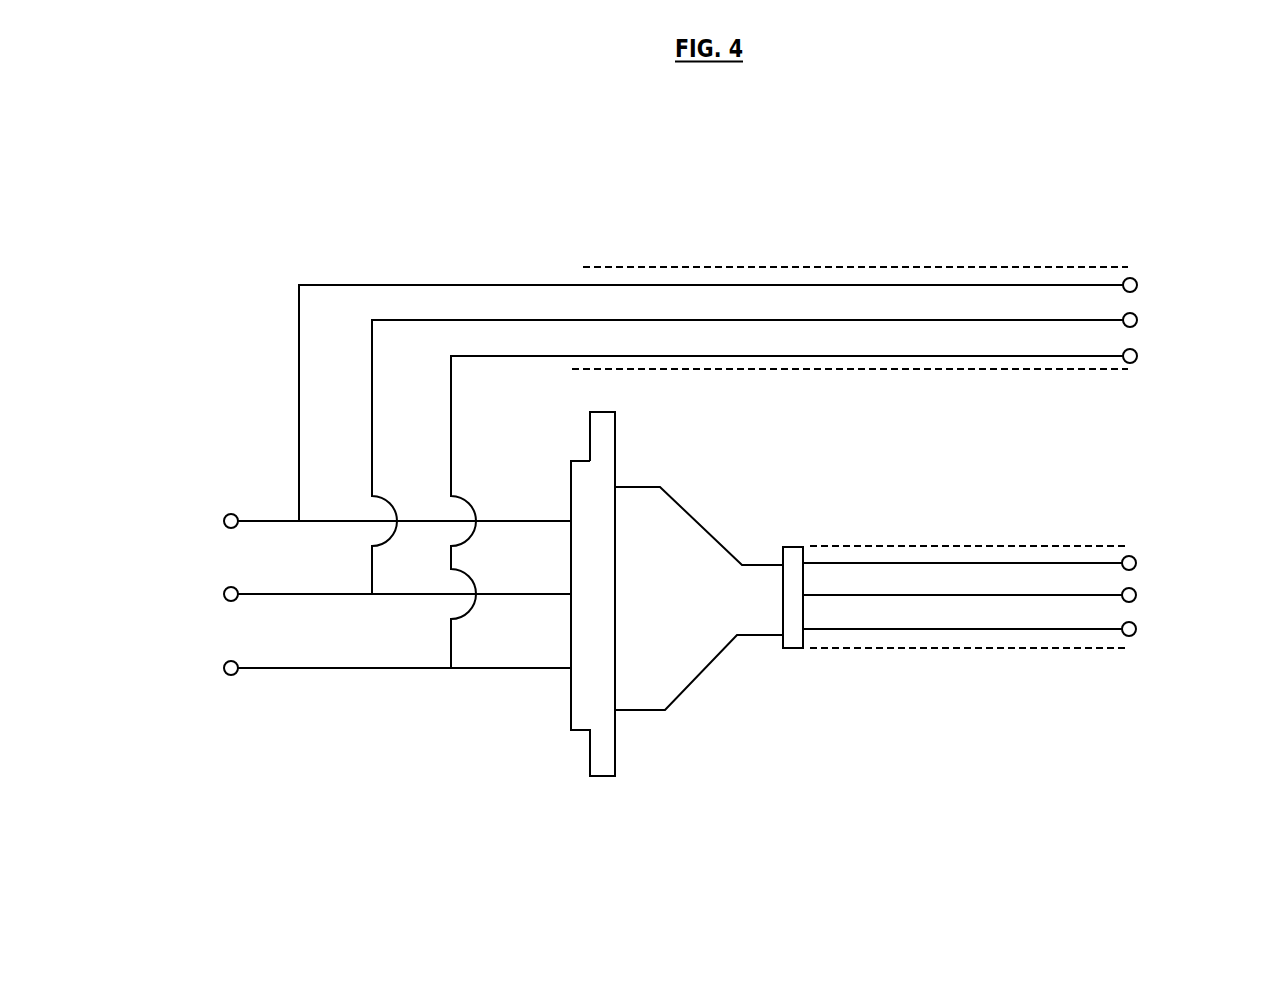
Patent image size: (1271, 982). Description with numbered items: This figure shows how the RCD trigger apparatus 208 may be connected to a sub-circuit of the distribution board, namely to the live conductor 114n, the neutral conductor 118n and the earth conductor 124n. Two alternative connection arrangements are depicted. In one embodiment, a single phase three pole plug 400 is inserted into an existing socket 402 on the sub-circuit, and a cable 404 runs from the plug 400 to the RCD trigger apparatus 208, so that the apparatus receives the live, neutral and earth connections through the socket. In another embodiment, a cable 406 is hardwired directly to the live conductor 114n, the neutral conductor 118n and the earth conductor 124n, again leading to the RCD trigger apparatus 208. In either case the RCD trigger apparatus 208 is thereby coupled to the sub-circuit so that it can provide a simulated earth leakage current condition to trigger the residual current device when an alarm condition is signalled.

The single phase three pole plug 400 is at (200, 169).
The existing socket 402 is at (590, 765).
The cable 404 is at (950, 648).
The cable 406 is at (884, 267).
The RCD trigger apparatus 208 is at (1000, 457).
The live conductor 114n is at (355, 521).
The neutral conductor 118n is at (352, 594).
The earth conductor 124n is at (354, 668).